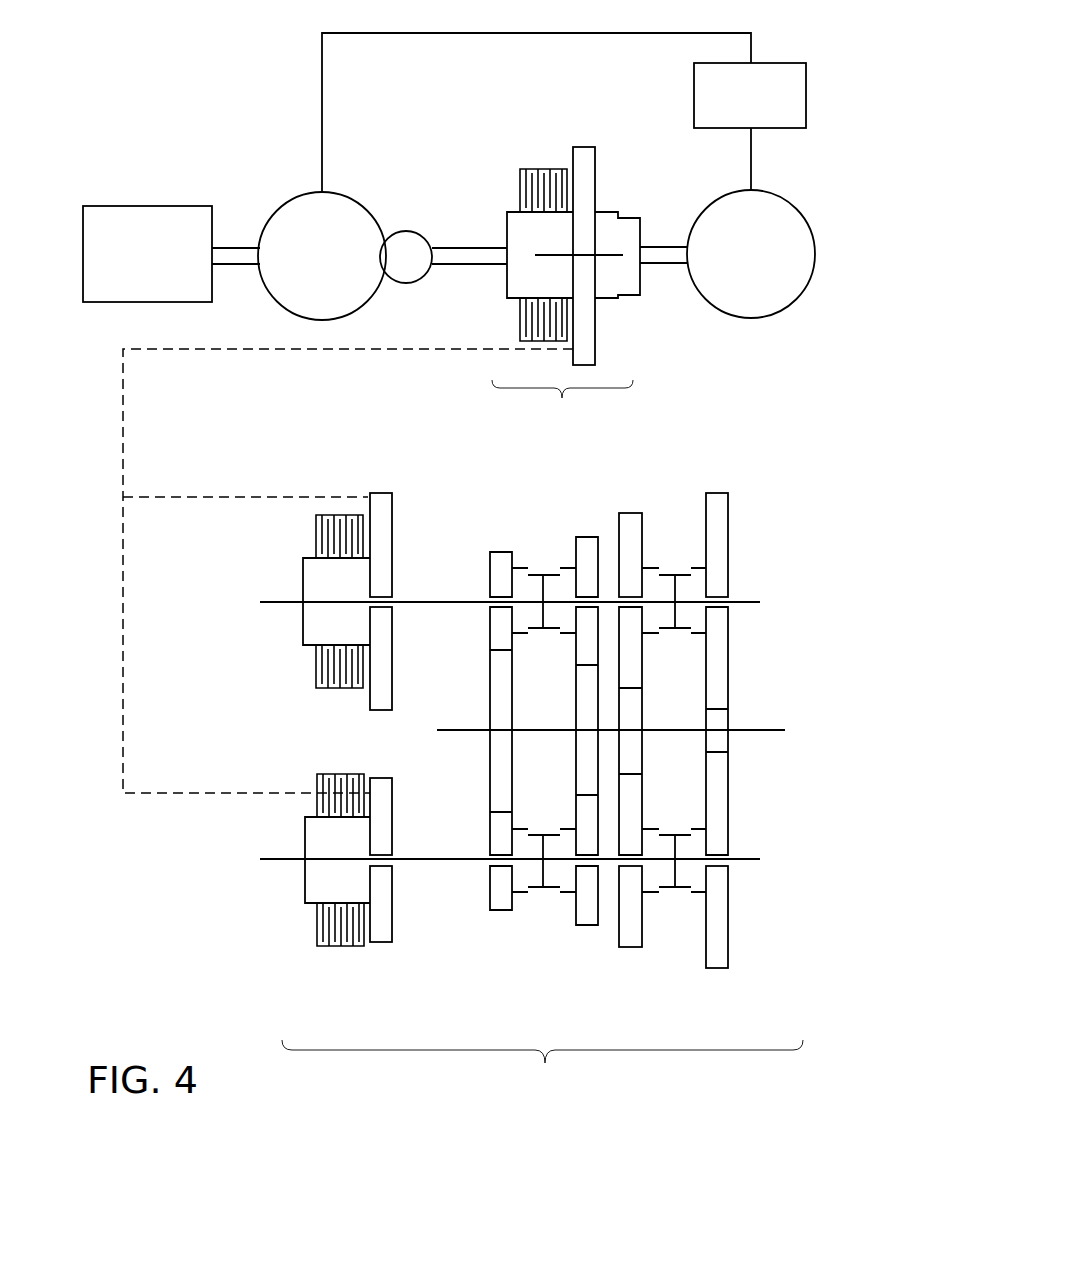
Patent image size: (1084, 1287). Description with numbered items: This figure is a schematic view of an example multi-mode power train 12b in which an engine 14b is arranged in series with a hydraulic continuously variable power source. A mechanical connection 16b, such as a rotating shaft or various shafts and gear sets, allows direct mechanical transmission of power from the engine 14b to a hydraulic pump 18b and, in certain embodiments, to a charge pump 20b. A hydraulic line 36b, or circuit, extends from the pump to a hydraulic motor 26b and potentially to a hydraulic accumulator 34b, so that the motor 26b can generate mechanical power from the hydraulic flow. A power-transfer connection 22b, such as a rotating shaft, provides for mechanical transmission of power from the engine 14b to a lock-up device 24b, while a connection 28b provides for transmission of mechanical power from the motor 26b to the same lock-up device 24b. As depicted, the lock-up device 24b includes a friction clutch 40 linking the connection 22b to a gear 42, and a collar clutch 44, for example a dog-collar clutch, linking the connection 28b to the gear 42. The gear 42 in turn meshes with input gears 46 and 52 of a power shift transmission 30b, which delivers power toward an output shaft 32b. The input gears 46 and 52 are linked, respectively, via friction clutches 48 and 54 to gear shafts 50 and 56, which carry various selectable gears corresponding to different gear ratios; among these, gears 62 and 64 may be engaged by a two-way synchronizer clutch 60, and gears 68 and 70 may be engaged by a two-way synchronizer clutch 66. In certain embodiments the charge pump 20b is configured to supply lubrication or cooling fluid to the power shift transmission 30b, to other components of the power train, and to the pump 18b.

The power train 12b is at (128, 866).
The engine 14b is at (152, 206).
The mechanical connection 16b is at (245, 265).
The hydraulic pump 18b is at (296, 197).
The charge pump 20b is at (404, 231).
The power-transfer connection 22b is at (470, 265).
The lock-up device 24b is at (589, 275).
The hydraulic motor 26b is at (772, 320).
The connection 28b is at (660, 263).
The power shift transmission 30b is at (520, 777).
The output shaft 32b is at (760, 730).
The hydraulic accumulator 34b is at (761, 63).
The hydraulic line 36b is at (322, 100).
The friction clutch 40 is at (545, 167).
The gear 42 is at (586, 147).
The collar clutch 44 is at (630, 218).
The input gear 46 is at (378, 493).
The friction clutch 48 is at (313, 527).
The gear shaft 50 is at (428, 600).
The input gear 52 is at (372, 944).
The friction clutch 54 is at (313, 912).
The gear shaft 56 is at (430, 862).
The two-way synchronizer clutch 60 is at (676, 570).
The gear 62 is at (728, 545).
The gear 64 is at (630, 513).
The two-way synchronizer clutch 66 is at (678, 888).
The gear 68 is at (728, 920).
The gear 70 is at (591, 941).